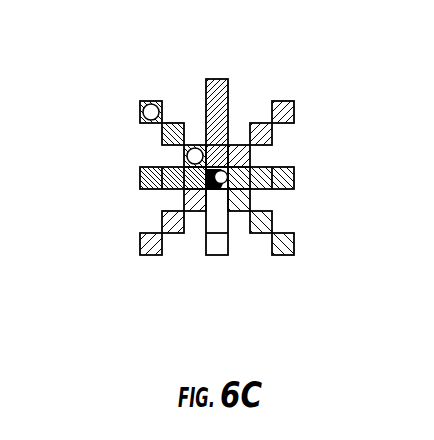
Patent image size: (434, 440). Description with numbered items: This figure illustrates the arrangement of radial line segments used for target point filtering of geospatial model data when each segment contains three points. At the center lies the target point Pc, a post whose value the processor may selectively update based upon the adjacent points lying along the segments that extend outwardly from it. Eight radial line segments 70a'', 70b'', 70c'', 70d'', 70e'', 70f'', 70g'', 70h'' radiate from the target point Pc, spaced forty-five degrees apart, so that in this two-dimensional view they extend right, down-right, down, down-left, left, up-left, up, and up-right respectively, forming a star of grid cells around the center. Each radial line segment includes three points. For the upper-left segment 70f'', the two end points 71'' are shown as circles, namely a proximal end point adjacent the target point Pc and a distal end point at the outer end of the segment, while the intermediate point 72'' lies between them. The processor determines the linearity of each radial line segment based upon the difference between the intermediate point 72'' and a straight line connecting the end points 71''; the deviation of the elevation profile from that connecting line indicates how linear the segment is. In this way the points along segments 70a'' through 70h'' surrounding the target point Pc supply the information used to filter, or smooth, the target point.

The radial line segment 70a'' is at (309, 179).
The radial line segment 70b'' is at (283, 254).
The radial line segment 70c'' is at (215, 257).
The radial line segment 70d'' is at (146, 255).
The radial line segment 70e'' is at (123, 176).
The radial line segment 70f'' is at (155, 103).
The radial line segment 70g'' is at (254, 104).
The radial line segment 70h'' is at (302, 105).
The end points 71'' is at (128, 132).
The intermediate point 72'' is at (212, 83).
The target point Pc is at (207, 175).